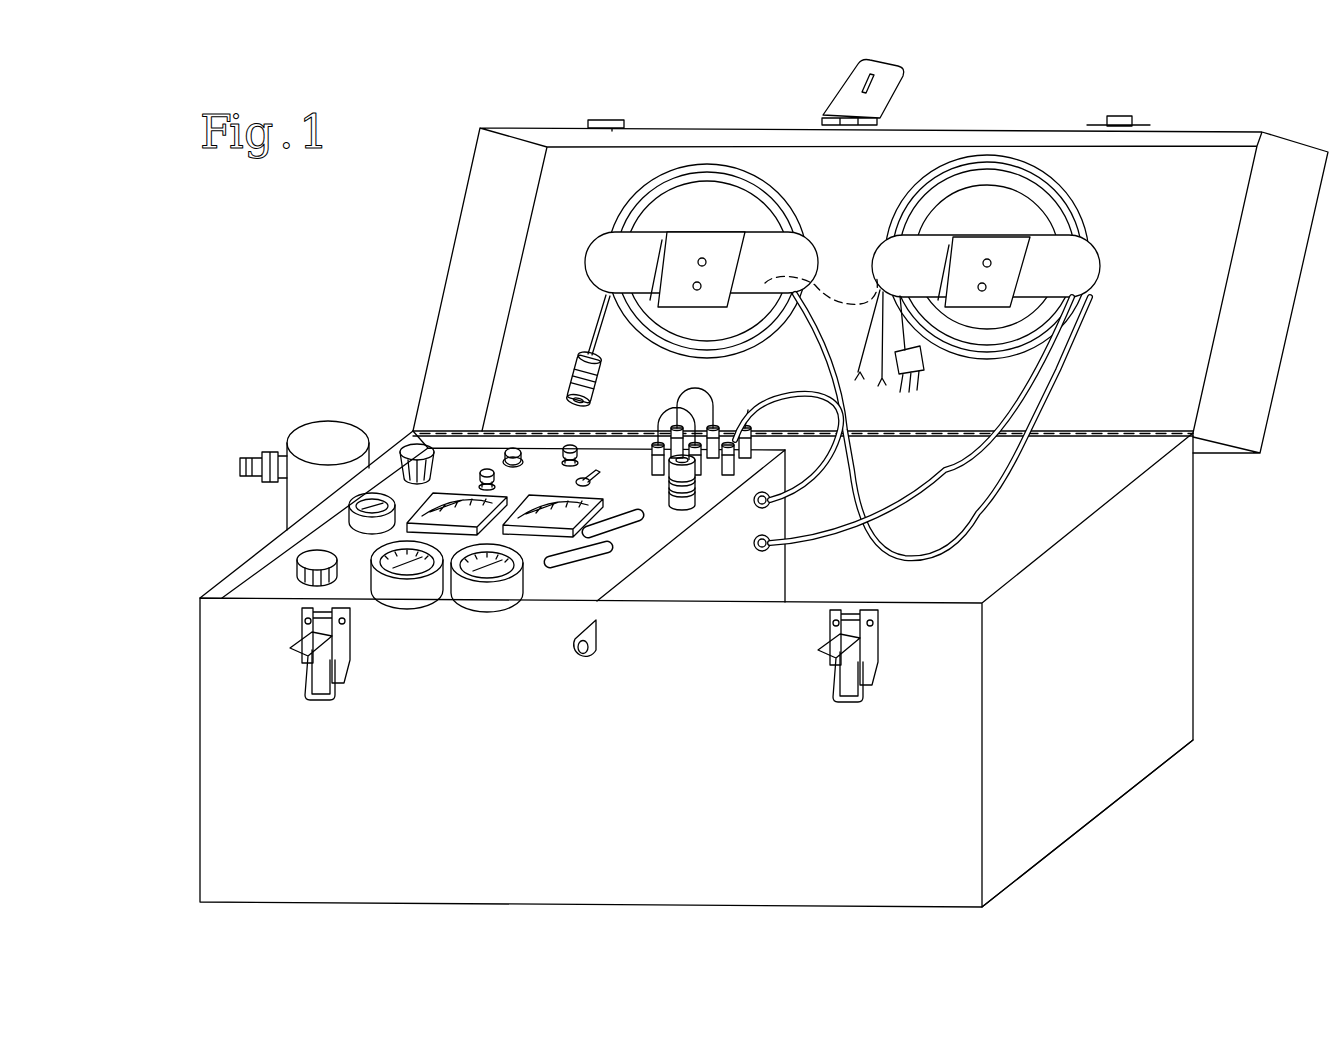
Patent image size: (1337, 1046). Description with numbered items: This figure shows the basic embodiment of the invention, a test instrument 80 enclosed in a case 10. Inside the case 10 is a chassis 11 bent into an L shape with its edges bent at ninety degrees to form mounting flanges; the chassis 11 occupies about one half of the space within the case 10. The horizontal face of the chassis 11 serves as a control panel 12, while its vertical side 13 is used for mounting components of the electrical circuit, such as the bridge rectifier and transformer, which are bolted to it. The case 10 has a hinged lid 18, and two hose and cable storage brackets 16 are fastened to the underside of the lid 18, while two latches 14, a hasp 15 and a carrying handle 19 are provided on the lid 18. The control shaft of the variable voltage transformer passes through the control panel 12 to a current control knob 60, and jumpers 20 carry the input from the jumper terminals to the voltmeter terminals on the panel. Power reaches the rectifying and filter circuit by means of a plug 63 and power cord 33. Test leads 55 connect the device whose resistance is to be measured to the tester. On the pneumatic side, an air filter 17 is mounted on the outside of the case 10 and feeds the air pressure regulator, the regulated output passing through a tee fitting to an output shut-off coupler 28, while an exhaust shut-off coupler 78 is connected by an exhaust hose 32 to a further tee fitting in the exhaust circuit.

The case 10 is at (1193, 652).
The chassis 11 is at (663, 547).
The control panel 12 is at (258, 570).
The vertical side 13 is at (788, 545).
The latches 14 is at (303, 664).
The hasp 15 is at (898, 66).
The hose and cable storage brackets 16 is at (593, 235).
The air filter 17 is at (313, 420).
The hinged lid 18 is at (452, 242).
The carrying handle 19 is at (838, 288).
The jumpers 20 is at (718, 424).
The output shut-off coupler 28 is at (693, 507).
The exhaust hose 32 is at (590, 315).
The power cord 33 is at (942, 477).
The test leads 55 is at (1066, 356).
The current control knob 60 is at (297, 556).
The plug 63 is at (927, 374).
The exhaust shut-off coupler 78 is at (570, 372).
The test instrument 80 is at (1197, 819).